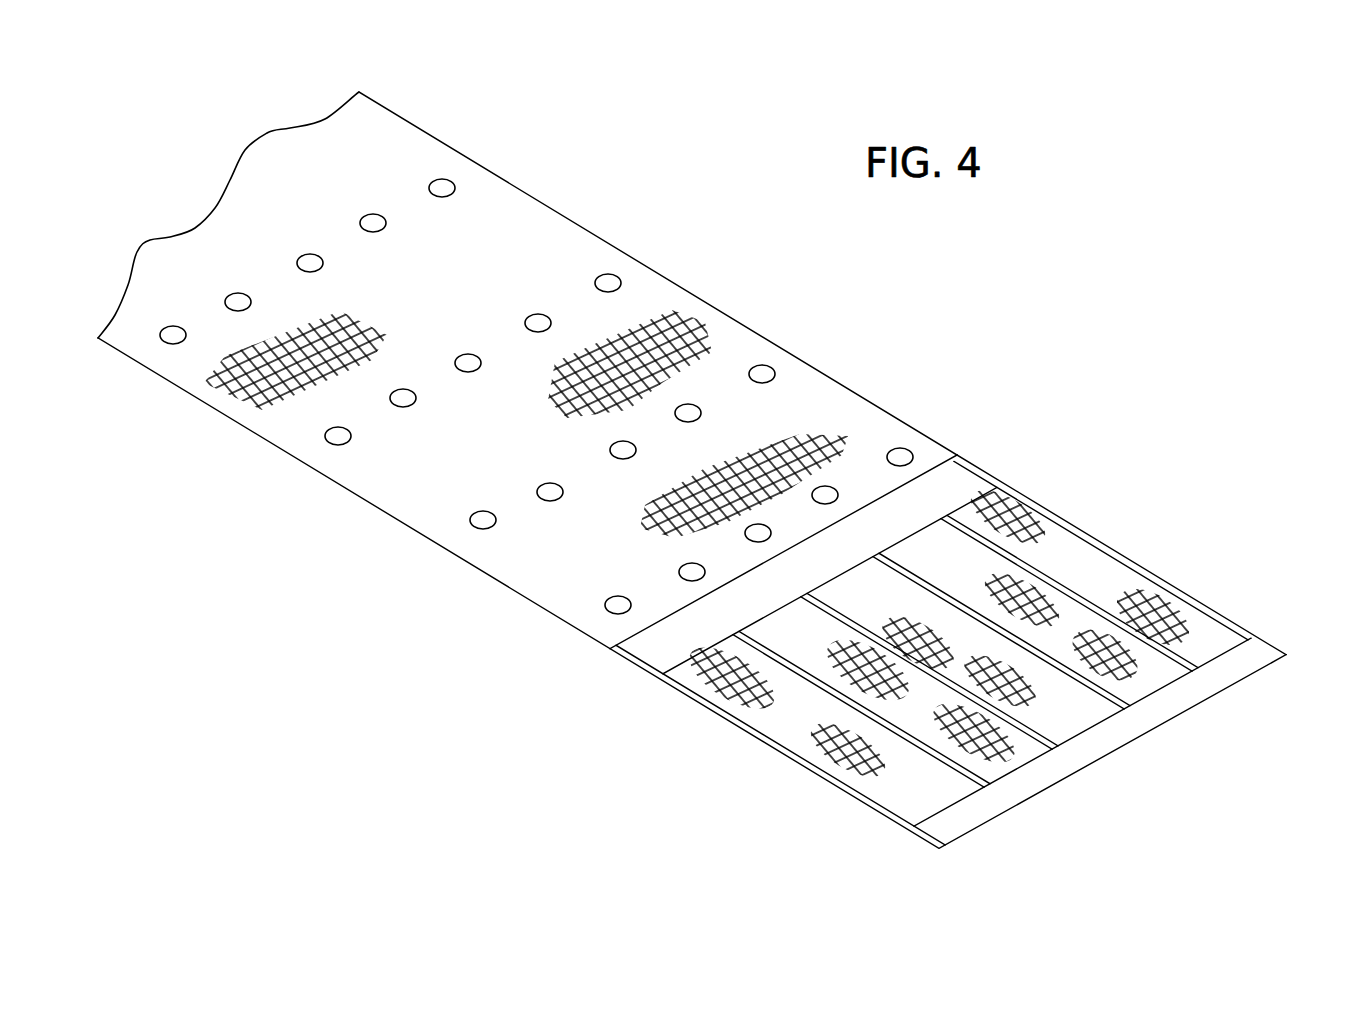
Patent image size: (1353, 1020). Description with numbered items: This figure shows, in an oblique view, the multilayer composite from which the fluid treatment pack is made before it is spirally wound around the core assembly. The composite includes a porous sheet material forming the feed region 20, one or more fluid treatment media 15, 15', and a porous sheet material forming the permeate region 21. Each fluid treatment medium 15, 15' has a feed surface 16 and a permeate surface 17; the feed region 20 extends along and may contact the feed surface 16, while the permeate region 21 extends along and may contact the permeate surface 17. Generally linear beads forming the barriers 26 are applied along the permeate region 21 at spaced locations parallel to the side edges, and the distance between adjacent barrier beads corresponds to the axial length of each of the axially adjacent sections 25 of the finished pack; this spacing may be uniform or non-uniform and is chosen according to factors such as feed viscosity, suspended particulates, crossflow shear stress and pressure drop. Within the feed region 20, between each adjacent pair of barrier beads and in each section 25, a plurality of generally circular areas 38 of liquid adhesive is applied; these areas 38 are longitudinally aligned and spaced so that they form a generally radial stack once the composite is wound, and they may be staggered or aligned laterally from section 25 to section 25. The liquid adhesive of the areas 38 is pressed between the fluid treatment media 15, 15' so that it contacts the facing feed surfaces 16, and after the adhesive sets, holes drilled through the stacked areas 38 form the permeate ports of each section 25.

The fluid treatment medium 15 is at (807, 487).
The second fluid treatment medium 15' is at (963, 650).
The feed surface 16 is at (688, 637).
The permeate surface 17 is at (1175, 695).
The feed region 20 is at (683, 325).
The permeate region 21 is at (1145, 602).
The axially adjacent sections 25 is at (987, 755).
The barriers 26 is at (870, 710).
The areas of liquid adhesive 38 is at (543, 322).